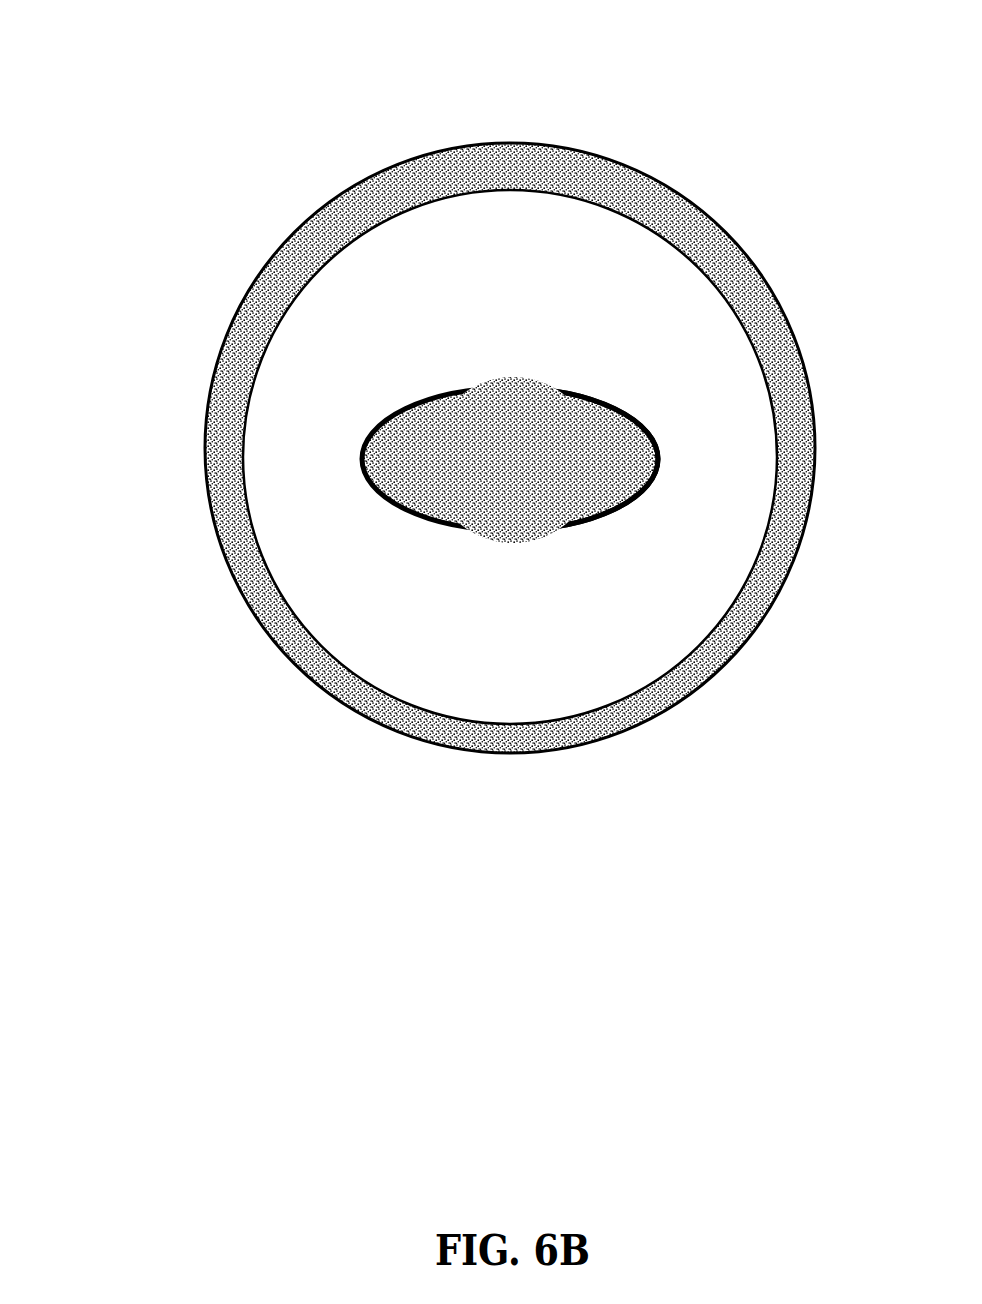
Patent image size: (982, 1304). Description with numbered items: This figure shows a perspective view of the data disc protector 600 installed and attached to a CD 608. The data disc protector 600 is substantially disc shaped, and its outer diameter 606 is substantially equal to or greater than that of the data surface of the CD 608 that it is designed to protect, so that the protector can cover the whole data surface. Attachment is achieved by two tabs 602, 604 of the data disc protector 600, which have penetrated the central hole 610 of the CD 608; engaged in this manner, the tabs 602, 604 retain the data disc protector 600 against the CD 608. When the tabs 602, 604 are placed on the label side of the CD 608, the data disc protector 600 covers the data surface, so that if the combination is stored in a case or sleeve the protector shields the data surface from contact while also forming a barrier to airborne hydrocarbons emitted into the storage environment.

The data disc protector 600 is at (647, 175).
The tab 602 is at (633, 410).
The tab 604 is at (383, 412).
The outer diameter 606 is at (503, 141).
The CD 608 is at (678, 243).
The central hole 610 is at (525, 378).